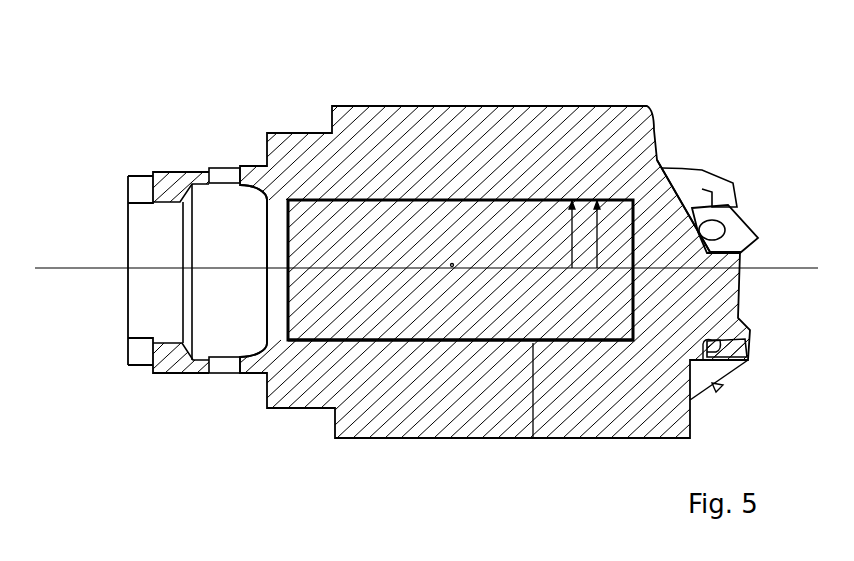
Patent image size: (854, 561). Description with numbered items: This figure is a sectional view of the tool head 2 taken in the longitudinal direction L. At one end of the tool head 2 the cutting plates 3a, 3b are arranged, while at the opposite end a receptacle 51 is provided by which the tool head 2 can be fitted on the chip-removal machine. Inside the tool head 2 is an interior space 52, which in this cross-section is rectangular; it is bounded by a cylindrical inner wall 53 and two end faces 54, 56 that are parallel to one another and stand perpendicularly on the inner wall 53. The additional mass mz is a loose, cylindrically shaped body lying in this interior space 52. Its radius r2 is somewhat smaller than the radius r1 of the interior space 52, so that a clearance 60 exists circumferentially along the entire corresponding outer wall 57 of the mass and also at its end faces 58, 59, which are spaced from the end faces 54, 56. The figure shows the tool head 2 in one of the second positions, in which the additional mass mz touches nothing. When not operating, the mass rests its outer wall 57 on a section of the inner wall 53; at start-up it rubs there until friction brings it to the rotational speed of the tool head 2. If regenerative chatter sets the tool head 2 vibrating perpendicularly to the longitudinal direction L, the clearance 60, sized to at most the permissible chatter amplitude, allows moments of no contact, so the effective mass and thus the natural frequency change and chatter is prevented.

The tool head 2 is at (368, 138).
The cutting plate 3a is at (738, 228).
The cutting plate 3b is at (750, 338).
The receptacle 51 is at (170, 253).
The interior space 52 is at (282, 214).
The cylindrical inner wall 53 is at (282, 198).
The end face 54 is at (267, 248).
The end face 56 is at (663, 172).
The corresponding outer wall 57 is at (380, 341).
The end face 58 is at (284, 320).
The end face 59 is at (633, 297).
The clearance 60 is at (533, 438).
The longitudinal direction L is at (436, 268).
The additional mass mz is at (452, 263).
The radius of the cylindrical interior space r1 is at (609, 234).
The radius of the cylinder r2 is at (557, 234).